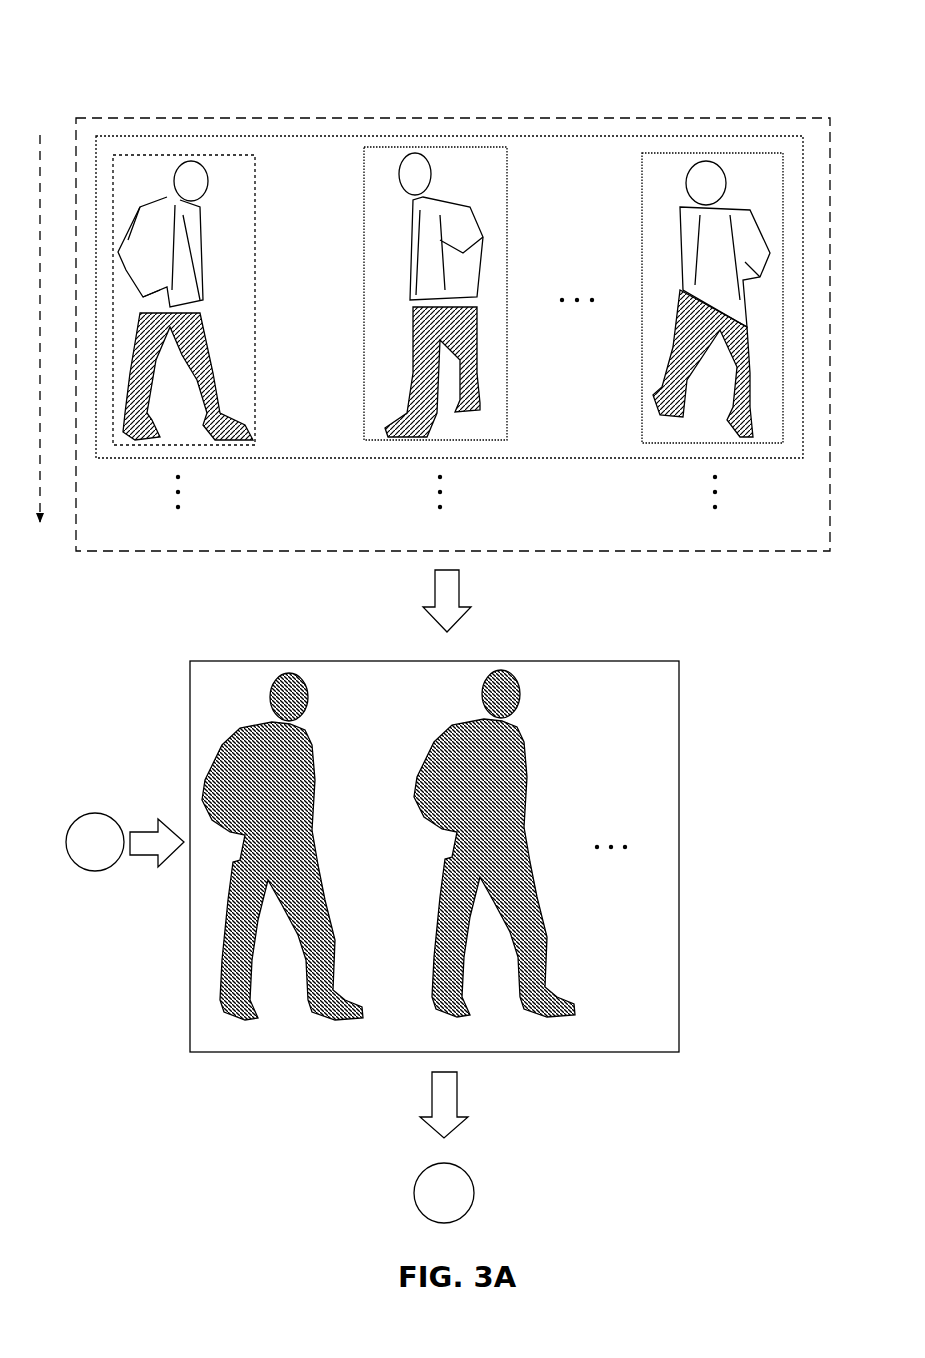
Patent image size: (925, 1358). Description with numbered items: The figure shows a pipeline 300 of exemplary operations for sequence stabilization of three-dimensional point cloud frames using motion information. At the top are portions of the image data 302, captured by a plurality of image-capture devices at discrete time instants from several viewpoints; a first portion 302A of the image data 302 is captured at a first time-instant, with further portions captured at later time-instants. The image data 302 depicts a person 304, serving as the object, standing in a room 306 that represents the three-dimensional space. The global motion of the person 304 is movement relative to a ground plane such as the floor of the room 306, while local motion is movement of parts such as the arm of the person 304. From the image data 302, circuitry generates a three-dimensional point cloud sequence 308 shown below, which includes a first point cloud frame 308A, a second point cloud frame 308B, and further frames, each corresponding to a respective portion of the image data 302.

The pipeline 300 is at (82, 56).
The image data 302 is at (573, 118).
The first portion of the image data 302A is at (682, 136).
The person 304 is at (183, 168).
The room 306 is at (235, 170).
The 3D point cloud sequence 308 is at (640, 662).
The first point cloud frame 308A is at (300, 680).
The second point cloud frame 308B is at (513, 683).